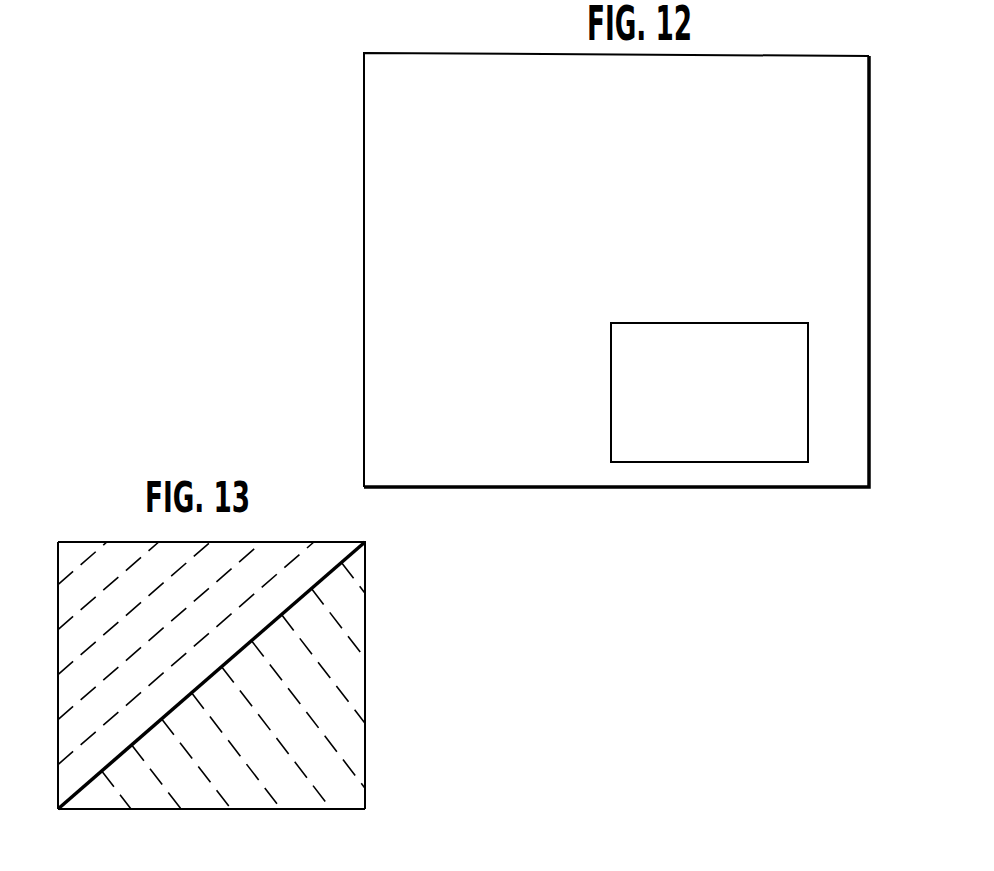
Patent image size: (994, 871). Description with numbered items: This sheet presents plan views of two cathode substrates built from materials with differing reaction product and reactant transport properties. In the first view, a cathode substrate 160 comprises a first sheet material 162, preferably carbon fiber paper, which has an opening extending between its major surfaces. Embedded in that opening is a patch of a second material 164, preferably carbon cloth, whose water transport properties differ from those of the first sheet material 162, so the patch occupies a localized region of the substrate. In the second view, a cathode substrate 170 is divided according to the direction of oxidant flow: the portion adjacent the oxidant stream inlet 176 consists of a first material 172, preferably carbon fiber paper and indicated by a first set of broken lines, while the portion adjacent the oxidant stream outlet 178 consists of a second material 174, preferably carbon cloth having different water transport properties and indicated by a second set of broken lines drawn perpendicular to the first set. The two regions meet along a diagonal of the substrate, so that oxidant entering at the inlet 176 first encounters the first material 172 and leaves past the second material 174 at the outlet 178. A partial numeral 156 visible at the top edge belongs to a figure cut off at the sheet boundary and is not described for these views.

In FIG. 12, the cut-off reference from adjacent figure 156 is at (97, 0).
In FIG. 12, the cathode substrate 160 is at (538, 298).
In FIG. 12, the first sheet material 162 is at (387, 208).
In FIG. 12, the patch of second material 164 is at (677, 462).
In FIG. 13, the cathode substrate 170 is at (273, 641).
In FIG. 13, the first material 172 is at (263, 558).
In FIG. 13, the second material 174 is at (348, 672).
In FIG. 13, the oxidant stream inlet 176 is at (77, 531).
In FIG. 13, the oxidant stream outlet 178 is at (375, 802).